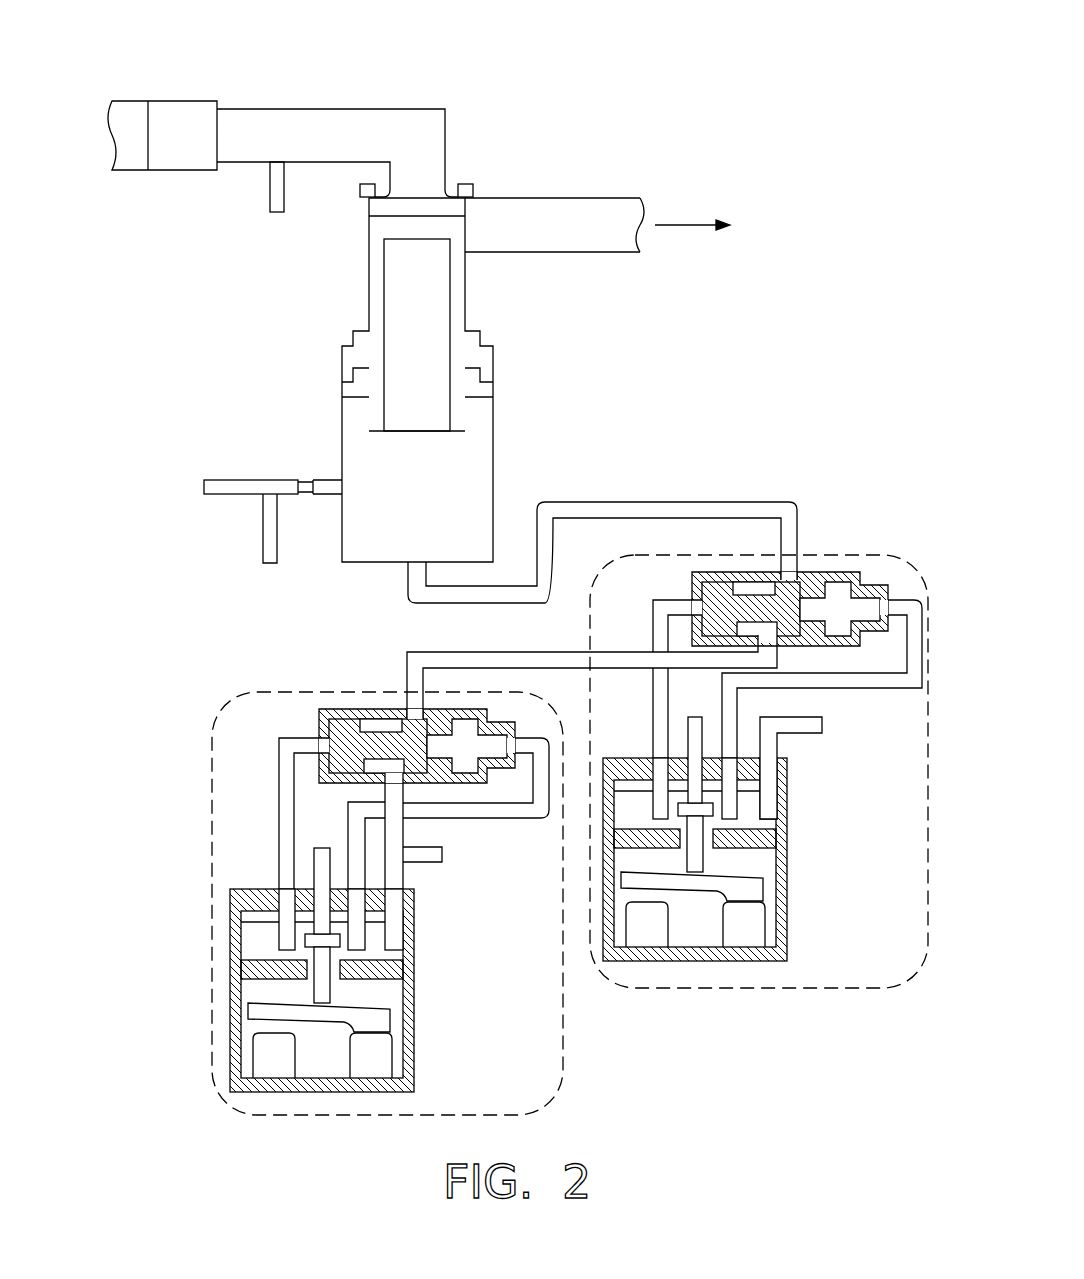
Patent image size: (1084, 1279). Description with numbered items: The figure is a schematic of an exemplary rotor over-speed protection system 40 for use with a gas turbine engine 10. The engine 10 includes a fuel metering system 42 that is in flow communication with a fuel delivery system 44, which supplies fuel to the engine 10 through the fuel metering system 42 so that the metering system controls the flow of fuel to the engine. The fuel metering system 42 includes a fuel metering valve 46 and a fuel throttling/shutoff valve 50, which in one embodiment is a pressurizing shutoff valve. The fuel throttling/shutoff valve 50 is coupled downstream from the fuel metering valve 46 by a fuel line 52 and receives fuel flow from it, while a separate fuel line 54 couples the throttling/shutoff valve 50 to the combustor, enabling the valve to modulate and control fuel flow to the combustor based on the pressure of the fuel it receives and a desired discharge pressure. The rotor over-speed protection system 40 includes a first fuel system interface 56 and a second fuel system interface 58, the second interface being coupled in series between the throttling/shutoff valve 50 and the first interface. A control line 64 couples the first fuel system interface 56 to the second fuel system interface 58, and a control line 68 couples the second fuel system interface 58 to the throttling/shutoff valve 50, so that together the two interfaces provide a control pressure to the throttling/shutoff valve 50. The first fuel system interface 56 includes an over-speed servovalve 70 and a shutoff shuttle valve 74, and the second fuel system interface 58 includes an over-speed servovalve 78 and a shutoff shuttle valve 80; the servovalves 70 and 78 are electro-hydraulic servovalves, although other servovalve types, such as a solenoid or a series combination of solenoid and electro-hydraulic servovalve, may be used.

The engine 10 is at (776, 62).
The rotor over-speed protection system 40 is at (843, 179).
The fuel metering system 42 is at (262, 80).
The fuel delivery system 44 is at (200, 275).
The fuel metering valve 46 is at (120, 170).
The fuel throttling/shutoff valve 50 is at (493, 437).
The fuel line 52 is at (345, 162).
The fuel line 54 is at (541, 197).
The first fuel system interface 56 is at (210, 865).
The second fuel system interface 58 is at (710, 990).
The control line 64 is at (492, 652).
The control line 68 is at (665, 502).
The over-speed servovalve 70 is at (414, 1046).
The shutoff shuttle valve 74 is at (319, 717).
The over-speed servovalve 78 is at (788, 876).
The shutoff shuttle valve 80 is at (692, 580).